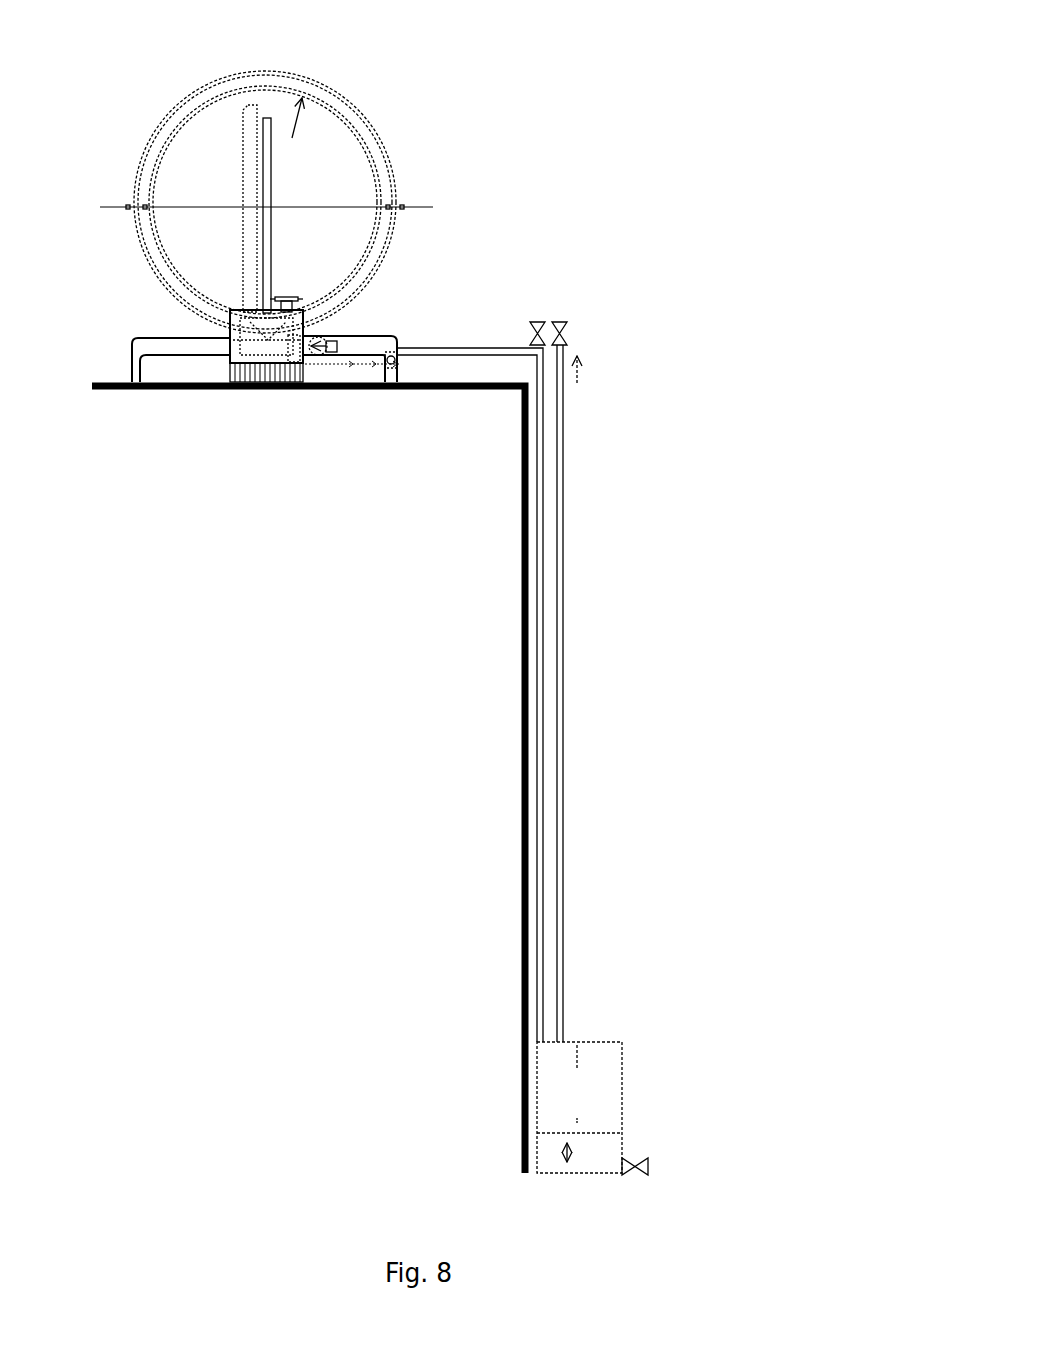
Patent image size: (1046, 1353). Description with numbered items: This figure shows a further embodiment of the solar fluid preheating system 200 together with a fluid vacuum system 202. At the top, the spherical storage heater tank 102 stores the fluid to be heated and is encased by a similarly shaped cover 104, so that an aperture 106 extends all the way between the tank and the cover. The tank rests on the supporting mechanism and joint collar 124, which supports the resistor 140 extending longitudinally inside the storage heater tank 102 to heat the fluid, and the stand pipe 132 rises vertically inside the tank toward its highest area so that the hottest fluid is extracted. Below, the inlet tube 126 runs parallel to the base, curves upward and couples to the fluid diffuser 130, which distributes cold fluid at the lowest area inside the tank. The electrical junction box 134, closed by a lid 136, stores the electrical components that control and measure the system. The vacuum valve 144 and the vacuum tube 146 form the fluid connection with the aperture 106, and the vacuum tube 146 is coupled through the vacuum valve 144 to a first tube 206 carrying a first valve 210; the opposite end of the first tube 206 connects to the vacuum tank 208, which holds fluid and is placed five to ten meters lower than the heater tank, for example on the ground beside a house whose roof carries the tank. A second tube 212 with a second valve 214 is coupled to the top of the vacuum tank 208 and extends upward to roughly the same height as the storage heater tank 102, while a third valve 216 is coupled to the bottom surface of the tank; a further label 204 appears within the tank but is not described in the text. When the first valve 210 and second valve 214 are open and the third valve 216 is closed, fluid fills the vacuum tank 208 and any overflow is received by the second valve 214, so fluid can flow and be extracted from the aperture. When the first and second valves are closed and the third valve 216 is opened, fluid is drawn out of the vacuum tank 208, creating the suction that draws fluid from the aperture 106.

The solar fluid preheating system 200 is at (632, 107).
The fluid vacuum system 202 is at (706, 370).
The storage heater tank 102 is at (378, 173).
The cover 104 is at (380, 124).
The aperture 106 is at (302, 78).
The supporting mechanism and joint collar 124 is at (233, 323).
The inlet tube 126 is at (257, 357).
The fluid diffuser 130 is at (286, 296).
The stand pipe 132 is at (240, 172).
The electrical junction box 134 is at (385, 372).
The lid 136 is at (392, 365).
The resistor 140 is at (267, 194).
The vacuum valve 144 is at (332, 368).
The vacuum tube 146 is at (293, 357).
The underground fluid reservoir 204 is at (616, 1116).
The first tube 206 is at (480, 343).
The vacuum tank 208 is at (630, 1039).
The first valve 210 is at (537, 318).
The second tube 212 is at (585, 467).
The second valve 214 is at (563, 318).
The third valve 216 is at (655, 1160).